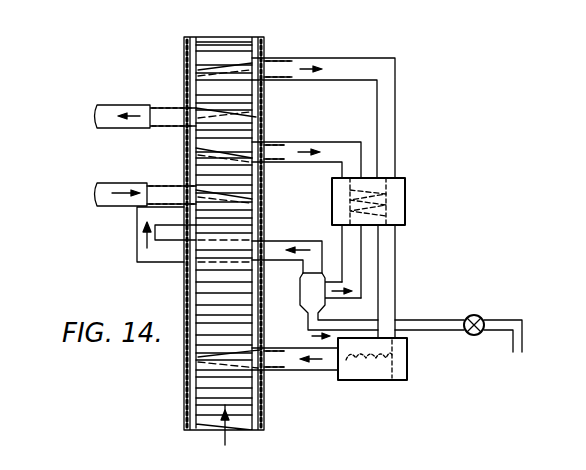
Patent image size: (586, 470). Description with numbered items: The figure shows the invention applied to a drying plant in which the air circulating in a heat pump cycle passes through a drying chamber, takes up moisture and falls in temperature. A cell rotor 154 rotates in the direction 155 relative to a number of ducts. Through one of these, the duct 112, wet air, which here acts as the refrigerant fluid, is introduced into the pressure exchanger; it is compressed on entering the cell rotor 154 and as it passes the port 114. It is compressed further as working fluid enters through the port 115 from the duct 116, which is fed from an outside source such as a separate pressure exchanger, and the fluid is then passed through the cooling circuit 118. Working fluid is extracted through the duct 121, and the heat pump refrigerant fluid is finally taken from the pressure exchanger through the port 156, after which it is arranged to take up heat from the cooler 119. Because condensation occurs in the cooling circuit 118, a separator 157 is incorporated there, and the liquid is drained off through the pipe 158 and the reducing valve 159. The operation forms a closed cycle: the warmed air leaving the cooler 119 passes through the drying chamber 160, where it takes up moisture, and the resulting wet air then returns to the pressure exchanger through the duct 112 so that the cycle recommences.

The duct 112 is at (276, 348).
The port 114 is at (184, 216).
The port 115 is at (180, 190).
The duct 116 is at (115, 184).
The cooling circuit 118 is at (298, 142).
The cooler 119 is at (406, 200).
The duct 121 is at (122, 106).
The cell rotor 154 is at (185, 393).
The direction of rotation 155 is at (226, 408).
The port 156 is at (268, 63).
The separator 157 is at (306, 286).
The pipe 158 is at (442, 321).
The reducing valve 159 is at (482, 316).
The drying chamber 160 is at (400, 362).